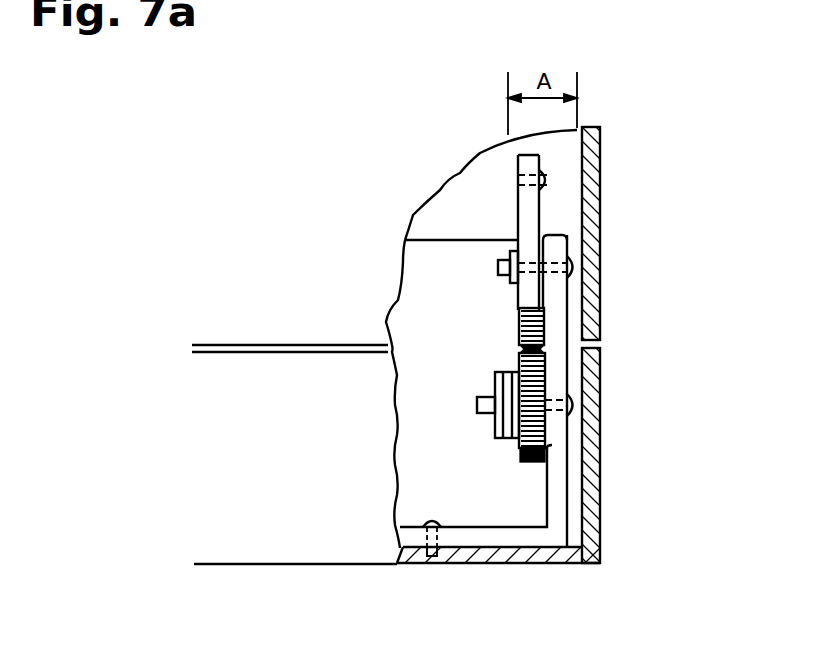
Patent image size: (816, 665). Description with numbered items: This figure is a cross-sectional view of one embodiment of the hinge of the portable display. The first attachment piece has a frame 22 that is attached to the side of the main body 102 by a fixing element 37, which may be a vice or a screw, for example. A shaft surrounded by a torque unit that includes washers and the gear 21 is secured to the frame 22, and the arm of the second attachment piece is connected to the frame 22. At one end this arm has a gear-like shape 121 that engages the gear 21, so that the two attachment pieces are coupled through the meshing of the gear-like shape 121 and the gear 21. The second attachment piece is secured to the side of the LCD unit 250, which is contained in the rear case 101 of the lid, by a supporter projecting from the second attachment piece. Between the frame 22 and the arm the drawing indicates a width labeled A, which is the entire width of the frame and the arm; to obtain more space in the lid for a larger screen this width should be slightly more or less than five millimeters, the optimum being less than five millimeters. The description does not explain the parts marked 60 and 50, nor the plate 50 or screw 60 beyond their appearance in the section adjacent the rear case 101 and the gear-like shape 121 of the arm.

The LCD unit 250 is at (447, 220).
The screw 60 is at (549, 176).
The rear case 101 is at (596, 203).
The mounting plate 50 is at (539, 248).
The gear-like shape 121 is at (545, 328).
The gear 21 is at (547, 447).
The main body 102 is at (597, 508).
The fixing element 37 is at (414, 513).
The frame 22 is at (555, 530).